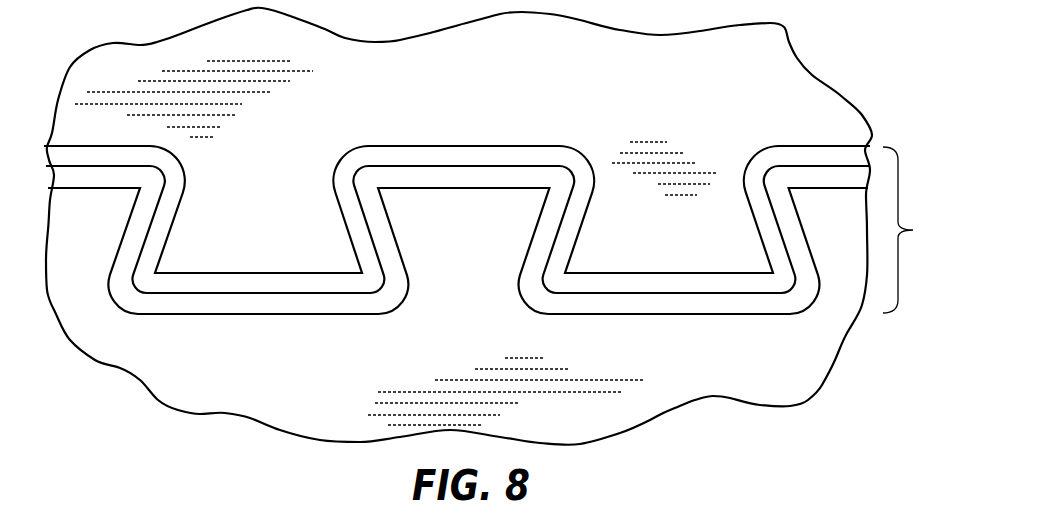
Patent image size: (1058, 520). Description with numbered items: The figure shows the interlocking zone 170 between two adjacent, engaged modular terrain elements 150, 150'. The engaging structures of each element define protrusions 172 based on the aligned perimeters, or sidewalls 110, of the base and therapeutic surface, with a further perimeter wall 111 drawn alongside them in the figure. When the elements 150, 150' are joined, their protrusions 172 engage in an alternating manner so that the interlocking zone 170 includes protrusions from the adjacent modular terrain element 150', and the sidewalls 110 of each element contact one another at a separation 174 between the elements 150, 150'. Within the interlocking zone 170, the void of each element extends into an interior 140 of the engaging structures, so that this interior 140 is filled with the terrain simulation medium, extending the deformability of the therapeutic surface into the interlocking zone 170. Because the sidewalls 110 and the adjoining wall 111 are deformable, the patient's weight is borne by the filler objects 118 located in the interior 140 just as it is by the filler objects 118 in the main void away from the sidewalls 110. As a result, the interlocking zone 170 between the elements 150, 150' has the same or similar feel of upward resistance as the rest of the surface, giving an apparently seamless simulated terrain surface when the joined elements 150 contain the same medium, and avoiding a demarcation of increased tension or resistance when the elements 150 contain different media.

The sidewall 110 is at (535, 147).
The second layer 111 is at (387, 146).
The filler objects 118 is at (258, 58).
The interior 140 is at (261, 214).
The modular terrain element 150 is at (402, 97).
The adjacent modular terrain element 150' is at (582, 387).
The interlocking zone 170 is at (922, 230).
The protrusions 172 is at (462, 126).
The separation 174 is at (400, 168).